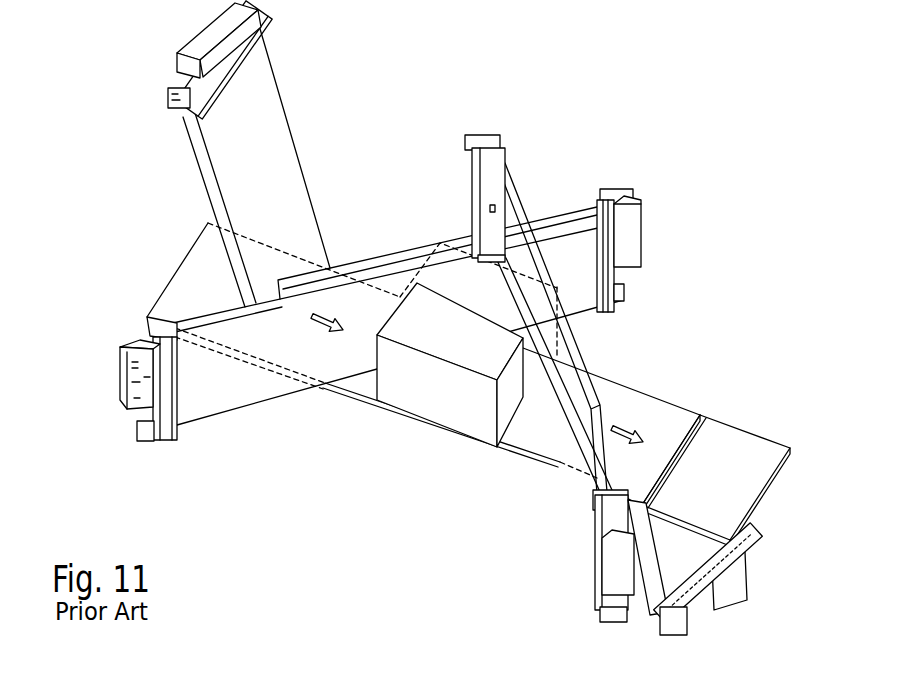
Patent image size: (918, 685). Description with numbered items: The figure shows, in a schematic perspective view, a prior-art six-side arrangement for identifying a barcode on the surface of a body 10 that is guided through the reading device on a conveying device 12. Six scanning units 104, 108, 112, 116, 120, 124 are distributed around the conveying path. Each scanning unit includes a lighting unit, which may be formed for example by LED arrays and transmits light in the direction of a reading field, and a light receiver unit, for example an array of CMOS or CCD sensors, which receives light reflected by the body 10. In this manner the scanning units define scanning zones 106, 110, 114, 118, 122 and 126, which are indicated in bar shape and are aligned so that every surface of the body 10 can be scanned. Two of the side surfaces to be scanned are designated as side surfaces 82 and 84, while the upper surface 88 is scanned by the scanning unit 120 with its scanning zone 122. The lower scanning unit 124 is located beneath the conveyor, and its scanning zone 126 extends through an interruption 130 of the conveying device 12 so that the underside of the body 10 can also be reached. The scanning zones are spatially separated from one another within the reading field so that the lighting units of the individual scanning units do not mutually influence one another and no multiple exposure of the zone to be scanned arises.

The body 10 is at (428, 346).
The conveying device 12 is at (617, 400).
The side surface 82 is at (397, 387).
The side surface 84 is at (507, 402).
The upper surface 88 is at (468, 337).
The scanning unit 104 is at (163, 413).
The scanning zone 106 is at (198, 388).
The scanning unit 108 is at (617, 185).
The scanning zone 110 is at (581, 232).
The scanning unit 112 is at (620, 562).
The scanning zone 114 is at (553, 437).
The scanning unit 116 is at (478, 135).
The scanning zone 118 is at (516, 205).
The scanning unit 120 is at (258, 22).
The scanning zone 122 is at (258, 143).
The lower scanning unit 124 is at (753, 533).
The scanning zone 126 is at (720, 537).
The interruption 130 is at (706, 416).